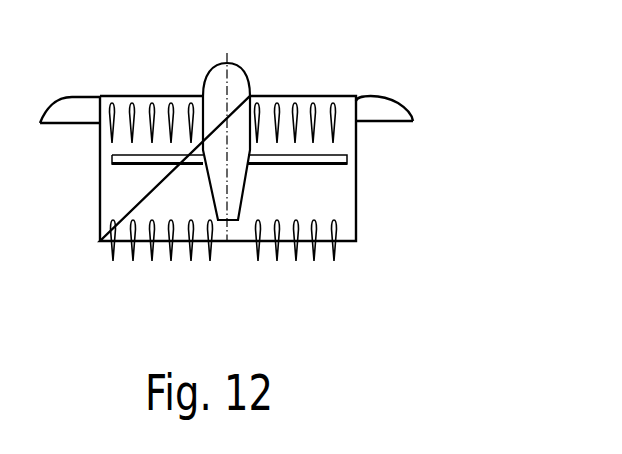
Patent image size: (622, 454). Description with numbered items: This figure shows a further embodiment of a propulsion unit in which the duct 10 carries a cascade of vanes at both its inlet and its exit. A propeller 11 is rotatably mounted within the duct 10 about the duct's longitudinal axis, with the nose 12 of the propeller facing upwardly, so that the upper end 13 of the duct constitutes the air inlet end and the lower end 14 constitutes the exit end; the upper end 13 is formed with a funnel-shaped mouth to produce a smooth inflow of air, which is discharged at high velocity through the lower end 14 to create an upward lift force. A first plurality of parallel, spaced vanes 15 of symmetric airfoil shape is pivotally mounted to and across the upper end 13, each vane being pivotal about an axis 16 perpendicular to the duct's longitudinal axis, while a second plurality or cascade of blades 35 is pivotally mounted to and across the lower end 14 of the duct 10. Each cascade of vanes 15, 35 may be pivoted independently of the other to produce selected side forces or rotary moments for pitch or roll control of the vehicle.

The duct 10 is at (356, 207).
The propeller 11 is at (112, 167).
The nose 12 is at (238, 86).
The upper end 13 is at (98, 97).
The lower end 14 is at (97, 227).
The vanes 15 is at (278, 102).
The axis 16 is at (335, 112).
The second plurality of blades 35 is at (262, 240).